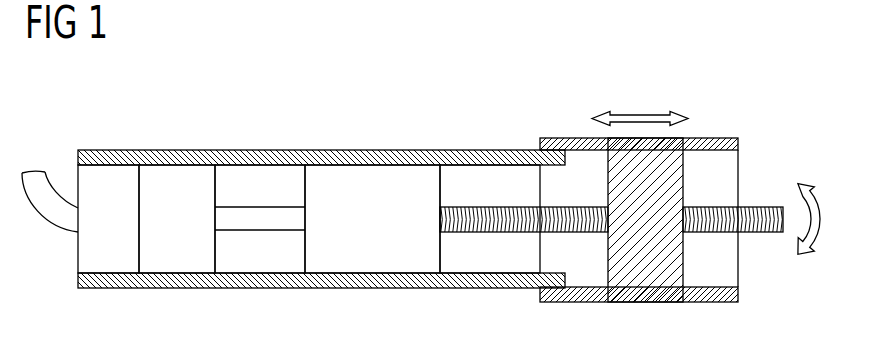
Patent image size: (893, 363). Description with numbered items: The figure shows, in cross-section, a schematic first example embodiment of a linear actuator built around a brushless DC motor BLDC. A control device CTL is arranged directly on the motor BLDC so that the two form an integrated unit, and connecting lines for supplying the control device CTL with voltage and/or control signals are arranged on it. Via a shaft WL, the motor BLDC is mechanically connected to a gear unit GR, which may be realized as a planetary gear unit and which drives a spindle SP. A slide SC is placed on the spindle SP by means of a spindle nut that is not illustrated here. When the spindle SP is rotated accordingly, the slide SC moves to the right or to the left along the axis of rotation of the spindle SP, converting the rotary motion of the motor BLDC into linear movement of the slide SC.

The control device CTL is at (112, 182).
The brushless DC motor BLDC is at (179, 182).
The shaft WL is at (257, 218).
The gear unit GR is at (363, 180).
The spindle SP is at (757, 208).
The slide SC is at (648, 290).